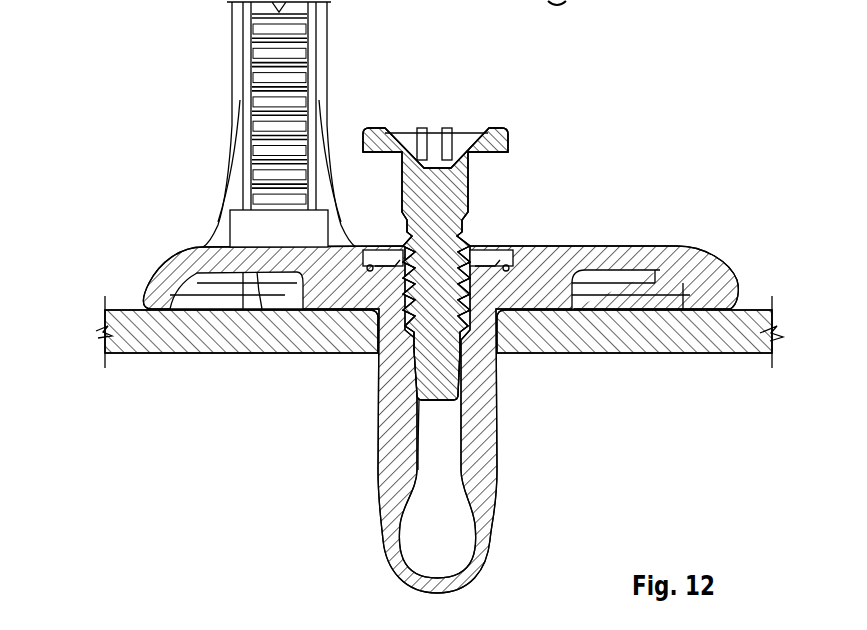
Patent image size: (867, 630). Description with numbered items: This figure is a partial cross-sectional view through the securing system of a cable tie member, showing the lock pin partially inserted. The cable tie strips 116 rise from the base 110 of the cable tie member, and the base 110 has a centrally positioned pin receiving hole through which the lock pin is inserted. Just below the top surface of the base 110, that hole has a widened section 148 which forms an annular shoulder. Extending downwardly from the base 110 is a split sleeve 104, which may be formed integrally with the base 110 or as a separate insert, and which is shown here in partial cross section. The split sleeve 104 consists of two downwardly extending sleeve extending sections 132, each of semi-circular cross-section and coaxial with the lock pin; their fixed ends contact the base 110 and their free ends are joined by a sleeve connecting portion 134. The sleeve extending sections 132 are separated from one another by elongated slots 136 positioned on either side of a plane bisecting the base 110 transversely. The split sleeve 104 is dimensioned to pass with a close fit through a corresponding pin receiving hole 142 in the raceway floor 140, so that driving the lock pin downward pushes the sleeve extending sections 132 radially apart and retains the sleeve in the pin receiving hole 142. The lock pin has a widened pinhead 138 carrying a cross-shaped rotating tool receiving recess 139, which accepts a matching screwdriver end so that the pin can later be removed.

The split sleeve 104 is at (440, 402).
The base 110 is at (572, 258).
The cable tie strips 116 is at (318, 63).
The sleeve extending sections 132 is at (487, 430).
The sleeve connecting portion 134 is at (472, 567).
The elongated slots 136 is at (438, 452).
The pinhead 138 is at (445, 243).
The rotating tool receiving recess 139 is at (400, 138).
The raceway floor 140 is at (225, 348).
The pin receiving hole 142 is at (377, 340).
The widened section 148 is at (485, 256).